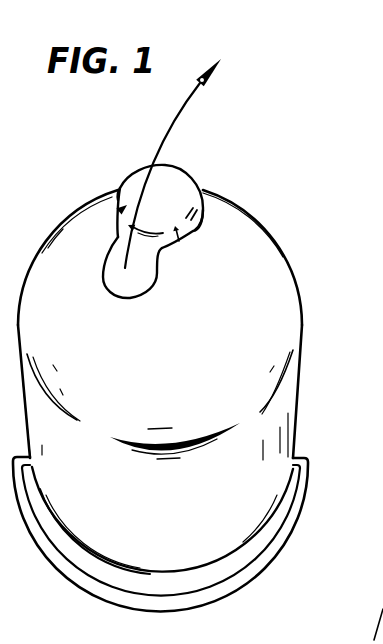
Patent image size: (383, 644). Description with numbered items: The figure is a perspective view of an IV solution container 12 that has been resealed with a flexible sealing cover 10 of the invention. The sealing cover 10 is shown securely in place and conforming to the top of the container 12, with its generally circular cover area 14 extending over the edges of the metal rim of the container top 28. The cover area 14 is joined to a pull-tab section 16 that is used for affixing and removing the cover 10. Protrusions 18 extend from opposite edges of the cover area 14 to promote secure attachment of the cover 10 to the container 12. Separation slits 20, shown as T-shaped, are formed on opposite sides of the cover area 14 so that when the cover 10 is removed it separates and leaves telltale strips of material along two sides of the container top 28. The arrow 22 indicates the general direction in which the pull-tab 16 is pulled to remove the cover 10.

The sealing cover 10 is at (204, 166).
The IV solution container 12 is at (171, 504).
The cover area 14 is at (141, 169).
The pull-tab section 16 is at (140, 293).
The protrusions 18 is at (125, 186).
The separation slits 20 is at (116, 210).
The arrow 22 is at (181, 118).
The container top 28 is at (186, 238).